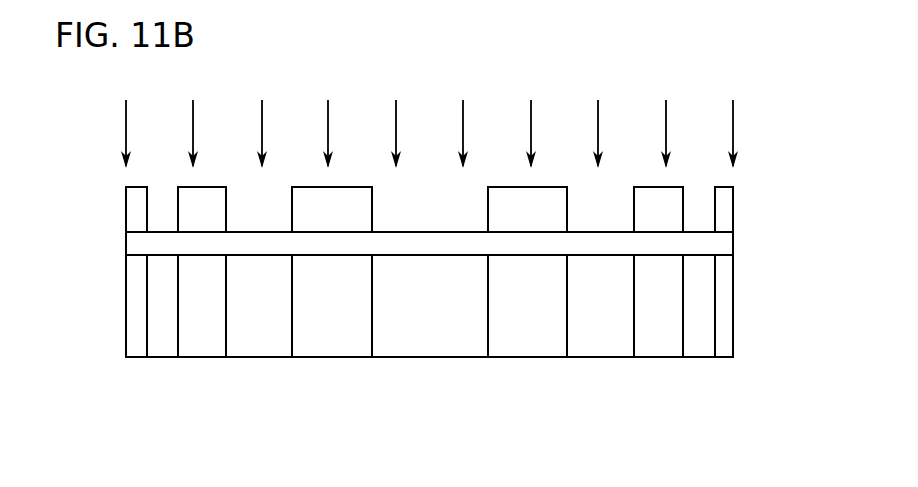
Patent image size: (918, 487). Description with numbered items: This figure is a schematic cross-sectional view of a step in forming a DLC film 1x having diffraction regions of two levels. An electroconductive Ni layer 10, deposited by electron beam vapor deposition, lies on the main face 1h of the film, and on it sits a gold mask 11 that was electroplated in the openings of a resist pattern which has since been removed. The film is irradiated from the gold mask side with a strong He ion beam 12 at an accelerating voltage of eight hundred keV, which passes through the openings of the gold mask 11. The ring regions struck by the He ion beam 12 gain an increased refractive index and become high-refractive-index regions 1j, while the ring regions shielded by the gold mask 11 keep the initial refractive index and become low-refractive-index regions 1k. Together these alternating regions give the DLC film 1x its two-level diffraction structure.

The He ion beam 12 is at (735, 126).
The gold mask 11 is at (725, 205).
The electroconductive Ni layer 10 is at (718, 244).
The DLC film 1x is at (735, 294).
The main face 1h is at (157, 255).
The high-refractive-index regions 1j is at (430, 337).
The low-refractive-index regions 1k is at (527, 337).